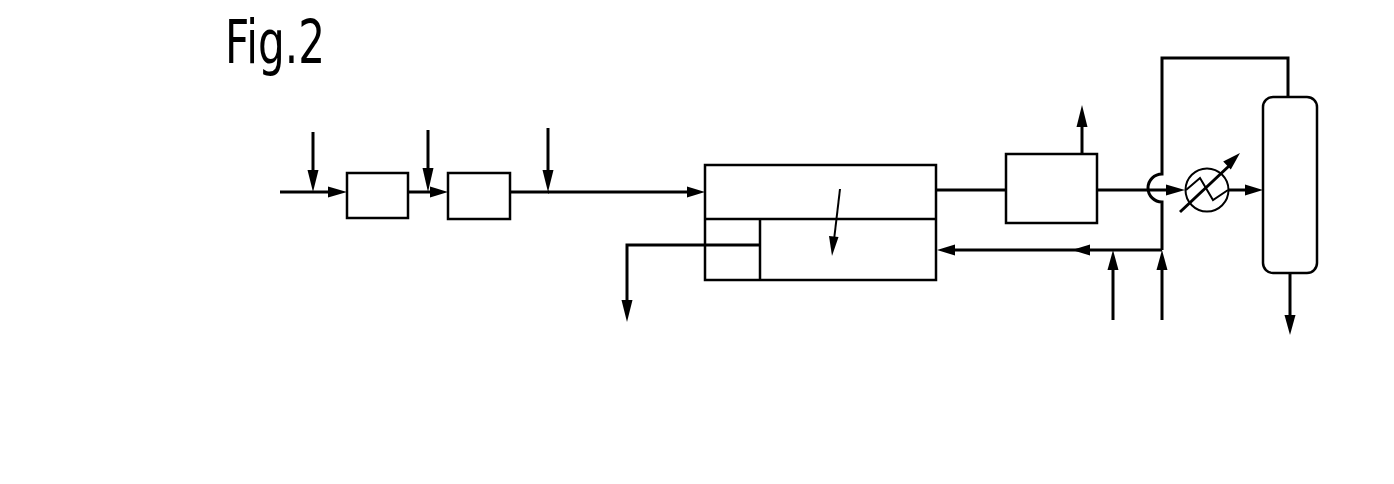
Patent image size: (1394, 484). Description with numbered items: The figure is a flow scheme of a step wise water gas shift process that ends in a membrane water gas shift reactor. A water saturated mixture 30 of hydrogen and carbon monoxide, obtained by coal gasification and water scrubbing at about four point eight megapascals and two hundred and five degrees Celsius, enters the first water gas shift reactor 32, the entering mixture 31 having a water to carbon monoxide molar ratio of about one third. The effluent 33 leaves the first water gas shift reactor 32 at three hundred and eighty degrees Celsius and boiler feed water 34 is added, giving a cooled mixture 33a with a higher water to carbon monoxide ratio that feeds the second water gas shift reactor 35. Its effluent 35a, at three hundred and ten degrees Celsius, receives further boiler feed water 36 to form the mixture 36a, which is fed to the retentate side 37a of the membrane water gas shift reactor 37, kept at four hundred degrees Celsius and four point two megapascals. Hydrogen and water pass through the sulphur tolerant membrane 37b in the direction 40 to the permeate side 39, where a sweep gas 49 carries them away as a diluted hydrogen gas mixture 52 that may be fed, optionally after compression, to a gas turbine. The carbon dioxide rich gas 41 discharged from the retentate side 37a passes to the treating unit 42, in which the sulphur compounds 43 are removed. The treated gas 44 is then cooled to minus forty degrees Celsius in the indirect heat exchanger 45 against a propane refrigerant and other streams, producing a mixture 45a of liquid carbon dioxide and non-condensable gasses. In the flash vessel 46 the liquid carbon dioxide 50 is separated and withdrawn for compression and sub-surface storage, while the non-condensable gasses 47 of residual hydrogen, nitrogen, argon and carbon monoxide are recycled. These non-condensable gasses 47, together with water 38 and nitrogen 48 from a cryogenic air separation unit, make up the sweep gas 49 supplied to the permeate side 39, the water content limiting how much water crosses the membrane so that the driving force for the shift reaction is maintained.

The water saturated mixture 30 is at (295, 197).
The mixture 31 is at (317, 150).
The first water gas shift reactor 32 is at (365, 209).
The effluent 33 is at (418, 197).
The mixture 33a is at (438, 187).
The boiler feed water 34 is at (424, 145).
The second water gas shift reactor 35 is at (467, 209).
The effluent 35a is at (528, 197).
The boiler feed water 36 is at (553, 148).
The mixture 36a is at (586, 187).
The membrane water gas shift reactor 37 is at (730, 165).
The retentate side 37a is at (772, 185).
The membrane 37b is at (912, 222).
The water 38 is at (1110, 293).
The permeate side 39 is at (846, 264).
The direction 40 is at (838, 207).
The carbon dioxide rich gas 41 is at (980, 186).
The treating unit 42 is at (1038, 209).
The sulphur compounds 43 is at (1078, 135).
The treated gas 44 is at (1125, 185).
The indirect heat exchanger 45 is at (1221, 212).
The mixture of liquid carbon dioxide and non-condensable gasses 45a is at (1237, 180).
The flash vessel 46 is at (1277, 200).
The non-condensable gasses 47 is at (1250, 58).
The nitrogen 48 is at (1165, 292).
The sweep gas 49 is at (1040, 255).
The liquid carbon dioxide 50 is at (1292, 302).
The diluted hydrogen gas mixture 52 is at (677, 250).